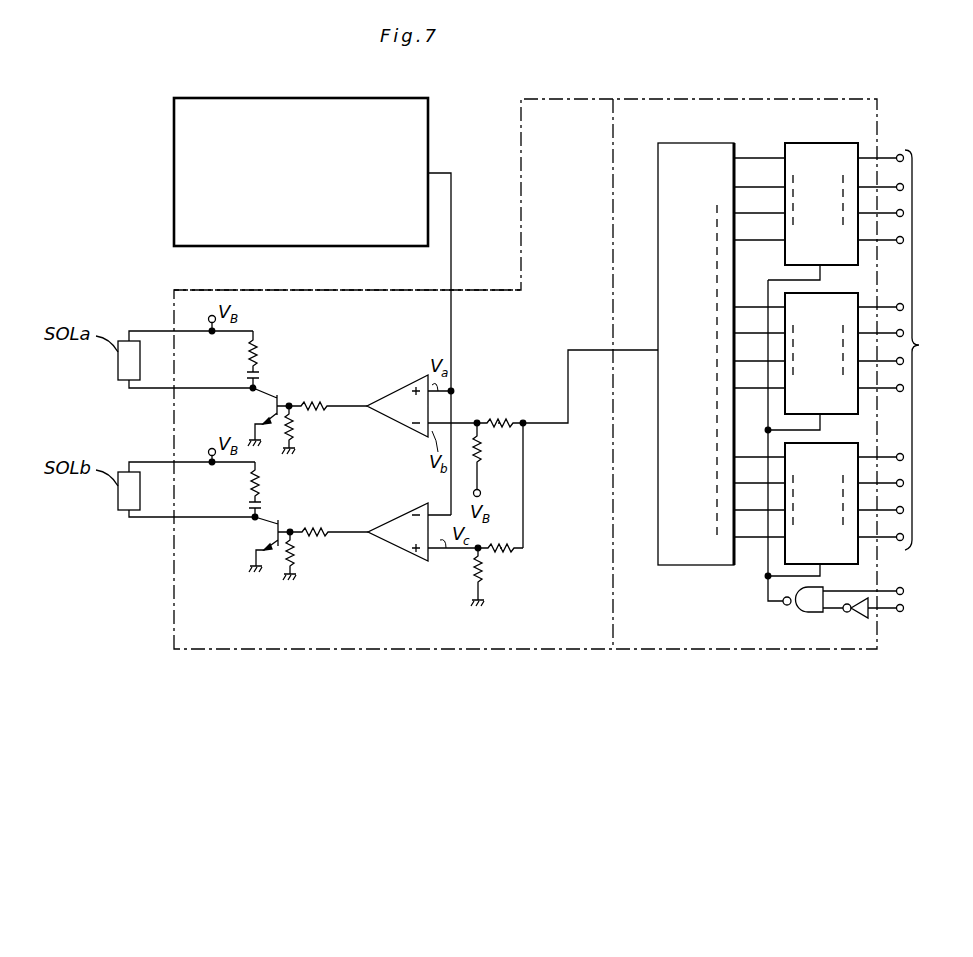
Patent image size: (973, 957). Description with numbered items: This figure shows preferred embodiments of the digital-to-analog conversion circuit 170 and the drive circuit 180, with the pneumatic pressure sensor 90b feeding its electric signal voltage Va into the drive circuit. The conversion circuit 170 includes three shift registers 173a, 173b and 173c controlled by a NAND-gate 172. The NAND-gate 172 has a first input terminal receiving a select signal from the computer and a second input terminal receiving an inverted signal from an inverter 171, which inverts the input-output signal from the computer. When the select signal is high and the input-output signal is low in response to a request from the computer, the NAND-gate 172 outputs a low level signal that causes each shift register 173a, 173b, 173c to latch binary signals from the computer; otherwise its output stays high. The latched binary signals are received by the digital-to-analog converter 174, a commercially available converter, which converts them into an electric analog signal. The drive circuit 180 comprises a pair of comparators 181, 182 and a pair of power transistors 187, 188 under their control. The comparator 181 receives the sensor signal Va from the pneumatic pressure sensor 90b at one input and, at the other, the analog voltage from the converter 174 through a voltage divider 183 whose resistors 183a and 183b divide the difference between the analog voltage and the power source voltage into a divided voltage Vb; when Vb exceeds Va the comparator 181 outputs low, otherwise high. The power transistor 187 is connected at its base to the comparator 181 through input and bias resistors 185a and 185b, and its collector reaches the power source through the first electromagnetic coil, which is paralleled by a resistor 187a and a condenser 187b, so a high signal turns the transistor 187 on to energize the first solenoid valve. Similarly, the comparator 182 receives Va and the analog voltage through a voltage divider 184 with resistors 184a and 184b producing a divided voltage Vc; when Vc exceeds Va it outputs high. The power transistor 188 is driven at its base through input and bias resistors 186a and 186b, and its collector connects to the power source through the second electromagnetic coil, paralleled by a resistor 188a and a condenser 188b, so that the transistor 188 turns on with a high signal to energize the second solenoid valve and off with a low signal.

The pneumatic pressure sensor 90b is at (174, 124).
The digital-to-analog conversion circuit 170 is at (702, 99).
The inverter 171 is at (856, 615).
The NAND-gate 172 is at (795, 606).
The shift register 173a is at (818, 143).
The shift register 173b is at (821, 296).
The shift register 173c is at (821, 446).
The digital-to-analog converter 174 is at (715, 143).
The drive circuit 180 is at (303, 289).
The comparator 181 is at (412, 382).
The comparator 182 is at (400, 548).
The voltage divider 183 is at (487, 420).
The resistor 183a is at (506, 419).
The resistor 183b is at (480, 454).
The voltage divider 184 is at (475, 553).
The resistor 184a is at (497, 552).
The resistor 184b is at (485, 573).
The input resistor 185a is at (312, 403).
The bias resistor 185b is at (293, 428).
The input resistor 186a is at (316, 527).
The bias resistor 186b is at (295, 555).
The power transistor 187 is at (273, 402).
The resistor 187a is at (258, 350).
The condenser 187b is at (260, 376).
The power transistor 188 is at (273, 530).
The resistor 188a is at (250, 480).
The condenser 188b is at (250, 505).